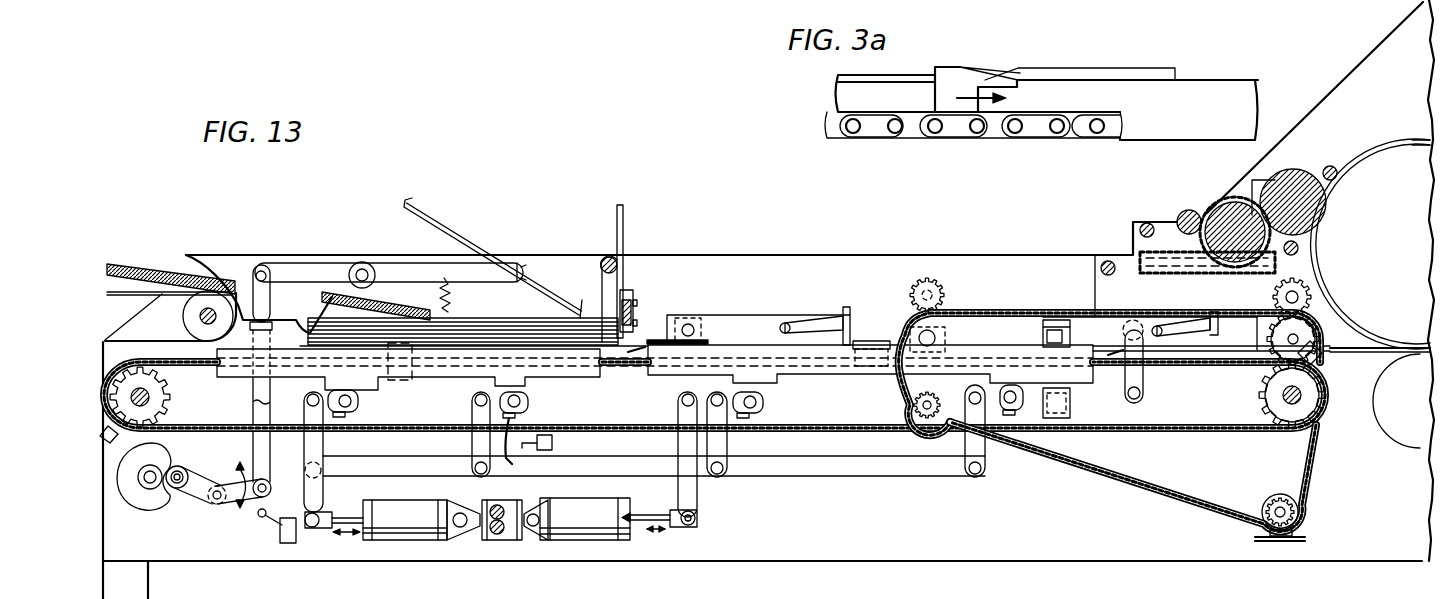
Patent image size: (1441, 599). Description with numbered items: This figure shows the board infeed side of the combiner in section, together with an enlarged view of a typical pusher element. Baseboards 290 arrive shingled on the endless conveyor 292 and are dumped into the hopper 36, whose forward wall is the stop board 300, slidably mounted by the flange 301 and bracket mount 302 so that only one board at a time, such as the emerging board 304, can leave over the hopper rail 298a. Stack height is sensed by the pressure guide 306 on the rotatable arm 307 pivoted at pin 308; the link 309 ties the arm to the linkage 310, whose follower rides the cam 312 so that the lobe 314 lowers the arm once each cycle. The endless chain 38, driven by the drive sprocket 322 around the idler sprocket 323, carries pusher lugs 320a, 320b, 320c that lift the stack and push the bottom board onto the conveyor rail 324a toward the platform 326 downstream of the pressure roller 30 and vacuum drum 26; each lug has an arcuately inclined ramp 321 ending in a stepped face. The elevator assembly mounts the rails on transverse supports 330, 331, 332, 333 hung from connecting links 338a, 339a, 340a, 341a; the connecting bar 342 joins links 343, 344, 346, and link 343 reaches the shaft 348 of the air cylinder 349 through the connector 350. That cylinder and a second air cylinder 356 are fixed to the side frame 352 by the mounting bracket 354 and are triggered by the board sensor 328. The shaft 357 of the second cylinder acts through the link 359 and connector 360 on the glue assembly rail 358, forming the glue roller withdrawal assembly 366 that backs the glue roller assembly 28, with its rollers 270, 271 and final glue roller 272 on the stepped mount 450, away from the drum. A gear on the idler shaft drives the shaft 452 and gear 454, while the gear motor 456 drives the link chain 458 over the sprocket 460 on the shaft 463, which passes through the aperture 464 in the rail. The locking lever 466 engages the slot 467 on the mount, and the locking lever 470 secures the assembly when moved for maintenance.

In FIG. 13, the baseboards 290 is at (190, 244).
In FIG. 13, the endless conveyor 292 is at (121, 292).
In FIG. 13, the pin 308 is at (362, 263).
In FIG. 13, the rotatable arm 307 is at (390, 275).
In FIG. 13, the hopper 36 is at (454, 216).
In FIG. 13, the pressure guide 306 is at (462, 245).
In FIG. 13, the flange 301 is at (607, 258).
In FIG. 13, the stop board 300 is at (624, 224).
In FIG. 13, the bracket mount 302 is at (636, 296).
In FIG. 13, the board 304 is at (656, 340).
In FIG. 13, the glue assembly rail 358 is at (730, 323).
In FIG. 13, the locking lever 470 is at (806, 323).
In FIG. 13, the pusher lug 320b is at (854, 323).
In FIG. 13, the aperture 464 is at (900, 327).
In FIG. 13, the gear 454 is at (945, 291).
In FIG. 13, the sprocket 460 is at (946, 331).
In FIG. 13, the shaft 463 is at (924, 350).
In FIG. 13, the conveyor rail 324a is at (827, 383).
In FIG. 13, the transverse support 332 is at (765, 408).
In FIG. 13, the connecting link 340a is at (750, 430).
In FIG. 13, the hopper rail 298a is at (603, 380).
In FIG. 13, the pusher lug 320a is at (412, 377).
In FIG. 3A, the pusher lug 320a is at (935, 98).
In FIG. 13, the transverse support 331 is at (530, 408).
In FIG. 13, the connecting link 339a is at (512, 462).
In FIG. 13, the link 344 is at (470, 445).
In FIG. 13, the link 343 is at (305, 449).
In FIG. 13, the transverse support 330 is at (358, 405).
In FIG. 13, the connecting link 338a is at (336, 420).
In FIG. 13, the link 309 is at (252, 412).
In FIG. 13, the idler sprocket 323 is at (163, 396).
In FIG. 13, the lobe 314 is at (162, 458).
In FIG. 13, the linkage 310 is at (150, 483).
In FIG. 13, the cam 312 is at (157, 503).
In FIG. 13, the shaft 348 is at (345, 516).
In FIG. 13, the air cylinder 349 is at (389, 519).
In FIG. 13, the connector 350 is at (305, 528).
In FIG. 13, the mounting bracket 354 is at (498, 540).
In FIG. 13, the air cylinder 356 is at (608, 525).
In FIG. 13, the shaft 357 is at (640, 522).
In FIG. 13, the link 359 is at (700, 497).
In FIG. 13, the connector 360 is at (700, 524).
In FIG. 13, the connecting bar 342 is at (812, 470).
In FIG. 13, the side frame 352 is at (861, 532).
In FIG. 13, the link 346 is at (968, 450).
In FIG. 13, the connecting link 341a is at (1003, 455).
In FIG. 13, the transverse support 333 is at (1030, 406).
In FIG. 13, the endless chain 38 is at (1140, 437).
In FIG. 13, the glue roller withdrawal assembly 366 is at (1106, 508).
In FIG. 13, the link chain 458 is at (1162, 497).
In FIG. 13, the gear motor 456 is at (1307, 521).
In FIG. 13, the drive sprocket 322 is at (1262, 401).
In FIG. 3A, the drive sprocket 322 is at (956, 67).
In FIG. 13, the pusher lug 320c is at (1364, 366).
In FIG. 13, the pressure roller 30 is at (1424, 414).
In FIG. 13, the vacuum drum 26 is at (1412, 252).
In FIG. 13, the shaft 452 is at (1310, 298).
In FIG. 13, the final glue roller 272 is at (1295, 176).
In FIG. 13, the roller 270 is at (1190, 208).
In FIG. 13, the roller 271 is at (1246, 242).
In FIG. 13, the glue roller assembly 28 is at (1142, 192).
In FIG. 13, the stepped mount 450 is at (1095, 272).
In FIG. 13, the board sensor 328 is at (1113, 285).
In FIG. 13, the locking lever 466 is at (1165, 326).
In FIG. 13, the slot 467 is at (1208, 335).
In FIG. 13, the platform 326 is at (1237, 345).
In FIG. 3A, the arcuately inclined ramp 321 is at (985, 80).